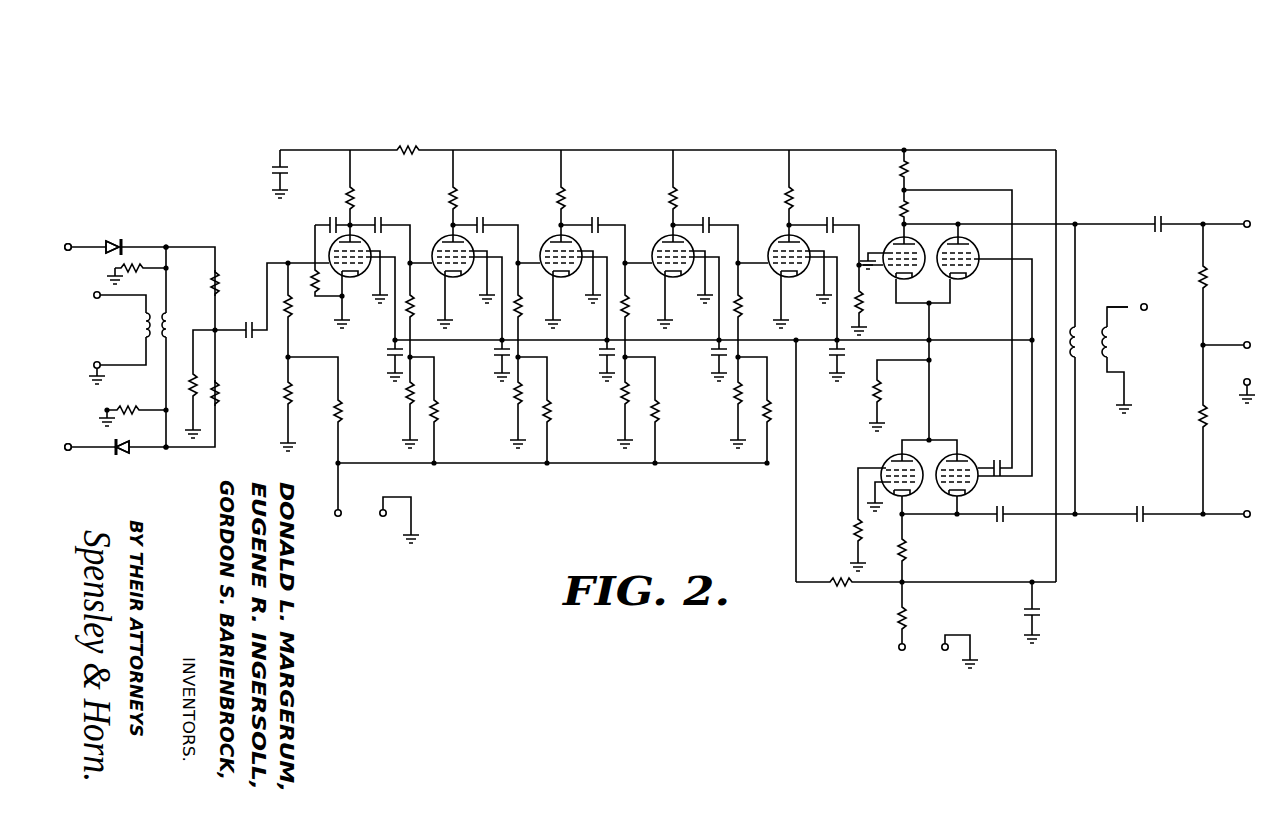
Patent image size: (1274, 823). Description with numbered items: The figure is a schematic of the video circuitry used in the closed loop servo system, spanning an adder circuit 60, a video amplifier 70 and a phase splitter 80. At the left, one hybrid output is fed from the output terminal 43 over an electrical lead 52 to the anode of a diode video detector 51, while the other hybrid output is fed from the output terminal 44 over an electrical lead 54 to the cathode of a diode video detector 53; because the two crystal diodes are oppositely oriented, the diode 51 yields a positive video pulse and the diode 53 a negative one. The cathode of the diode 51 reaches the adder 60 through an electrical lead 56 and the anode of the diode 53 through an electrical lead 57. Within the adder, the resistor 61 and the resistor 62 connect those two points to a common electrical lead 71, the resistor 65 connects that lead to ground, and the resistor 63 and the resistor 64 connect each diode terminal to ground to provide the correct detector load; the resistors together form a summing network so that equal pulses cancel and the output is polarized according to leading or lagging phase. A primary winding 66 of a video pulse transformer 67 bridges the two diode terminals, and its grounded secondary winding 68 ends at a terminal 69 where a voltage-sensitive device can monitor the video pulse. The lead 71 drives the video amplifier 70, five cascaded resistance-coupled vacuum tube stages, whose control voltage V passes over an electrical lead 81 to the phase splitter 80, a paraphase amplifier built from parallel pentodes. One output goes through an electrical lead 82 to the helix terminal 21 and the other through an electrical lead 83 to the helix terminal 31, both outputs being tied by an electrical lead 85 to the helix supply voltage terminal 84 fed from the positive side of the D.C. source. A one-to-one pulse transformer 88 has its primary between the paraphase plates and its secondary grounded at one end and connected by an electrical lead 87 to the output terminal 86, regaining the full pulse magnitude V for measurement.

The helix terminal 21 is at (1246, 522).
The helix terminal 31 is at (1242, 231).
The output terminal 43 is at (70, 244).
The output terminal 44 is at (71, 450).
The diode video detector 51 is at (122, 238).
The electrical lead 52 is at (90, 246).
The diode video detector 53 is at (123, 452).
The electrical lead 54 is at (112, 454).
The electrical lead 56 is at (159, 450).
The electrical lead 57 is at (156, 245).
The adder circuit 60 is at (231, 177).
The resistor 61 is at (220, 281).
The resistor 62 is at (221, 392).
The resistor 63 is at (148, 271).
The resistor 64 is at (144, 408).
The resistor 65 is at (191, 380).
The primary winding 66 is at (168, 318).
The video pulse transformer 67 is at (138, 329).
The secondary winding 68 is at (140, 318).
The terminal 69 is at (95, 295).
The video amplifier 70 is at (849, 55).
The electrical lead 71 is at (226, 329).
The phase splitter 80 is at (1052, 55).
The electrical lead 81 is at (818, 234).
The electrical lead 82 is at (1220, 516).
The electrical lead 83 is at (1234, 224).
The helix supply voltage terminal 84 is at (1240, 350).
The electrical lead 85 is at (1218, 345).
The output terminal 86 is at (1148, 307).
The electrical lead 87 is at (1128, 307).
The pulse transformer 88 is at (1086, 300).